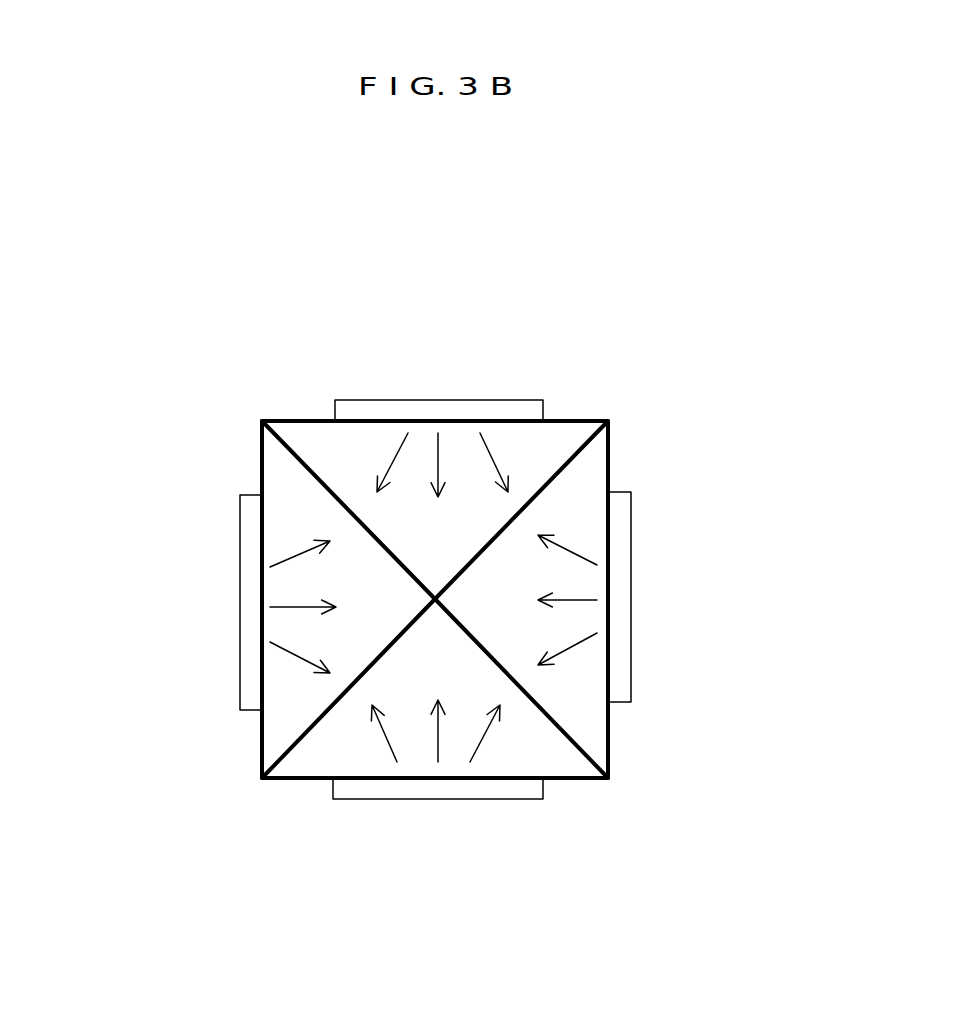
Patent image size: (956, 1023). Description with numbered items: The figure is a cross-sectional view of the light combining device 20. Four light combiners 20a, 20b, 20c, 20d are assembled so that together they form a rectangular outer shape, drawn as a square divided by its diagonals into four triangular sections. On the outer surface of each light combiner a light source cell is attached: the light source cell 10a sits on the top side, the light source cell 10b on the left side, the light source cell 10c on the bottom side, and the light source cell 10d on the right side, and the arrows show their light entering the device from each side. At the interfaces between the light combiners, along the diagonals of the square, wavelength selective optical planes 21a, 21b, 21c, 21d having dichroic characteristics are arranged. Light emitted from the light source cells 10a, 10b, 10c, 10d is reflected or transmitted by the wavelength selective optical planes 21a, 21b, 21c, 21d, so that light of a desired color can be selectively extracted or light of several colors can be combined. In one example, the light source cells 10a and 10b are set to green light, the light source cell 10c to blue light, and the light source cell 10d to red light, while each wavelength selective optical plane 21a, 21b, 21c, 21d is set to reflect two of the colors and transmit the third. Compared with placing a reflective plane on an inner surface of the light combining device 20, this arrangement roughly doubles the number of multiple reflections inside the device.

The light combining device 20 is at (445, 536).
The light combiner 20a is at (365, 458).
The light combiner 20b is at (300, 525).
The light combiner 20c is at (368, 748).
The light combiner 20d is at (580, 520).
The light source cell 10a is at (462, 414).
The light source cell 10b is at (255, 620).
The light source cell 10c is at (467, 790).
The light source cell 10d is at (618, 620).
The wavelength selective optical plane 21a is at (565, 462).
The wavelength selective optical plane 21b is at (300, 463).
The wavelength selective optical plane 21c is at (308, 740).
The wavelength selective optical plane 21d is at (572, 735).